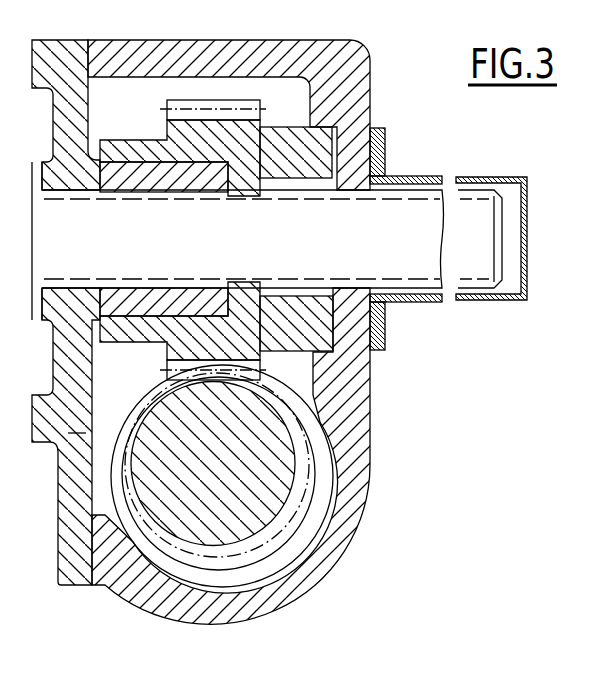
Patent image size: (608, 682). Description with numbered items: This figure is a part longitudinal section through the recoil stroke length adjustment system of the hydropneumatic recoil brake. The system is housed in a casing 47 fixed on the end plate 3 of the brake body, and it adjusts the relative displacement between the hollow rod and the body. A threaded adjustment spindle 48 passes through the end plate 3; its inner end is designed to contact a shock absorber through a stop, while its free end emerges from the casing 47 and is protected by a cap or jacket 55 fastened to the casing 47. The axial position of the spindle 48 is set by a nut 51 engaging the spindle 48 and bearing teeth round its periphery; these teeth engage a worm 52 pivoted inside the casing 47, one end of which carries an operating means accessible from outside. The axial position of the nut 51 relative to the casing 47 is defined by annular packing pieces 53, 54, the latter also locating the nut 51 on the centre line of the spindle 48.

The end plate 3 is at (92, 434).
The casing 47 is at (352, 421).
The threaded adjustment spindle 48 is at (272, 239).
The nut 51 is at (170, 343).
The worm 52 is at (222, 476).
The annular packing piece 53 is at (286, 162).
The annular packing piece 54 is at (148, 176).
The cap or jacket 55 is at (528, 240).